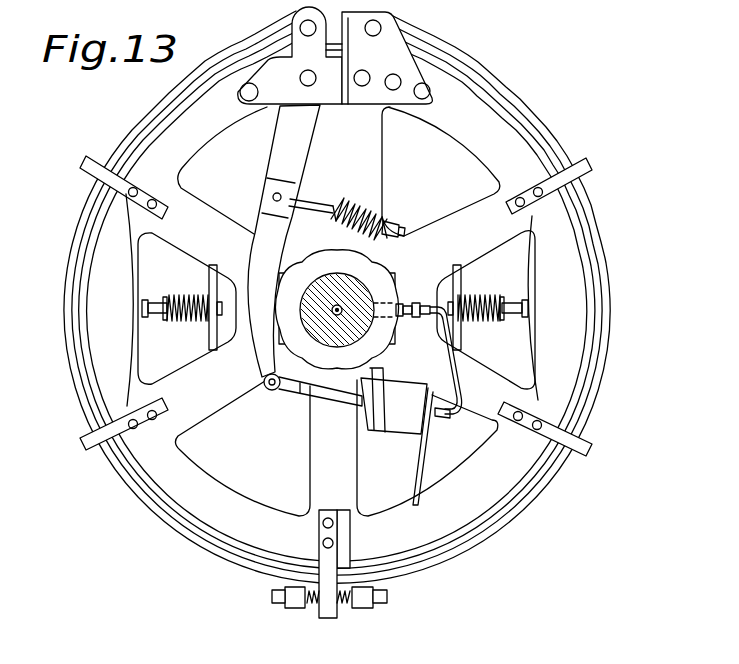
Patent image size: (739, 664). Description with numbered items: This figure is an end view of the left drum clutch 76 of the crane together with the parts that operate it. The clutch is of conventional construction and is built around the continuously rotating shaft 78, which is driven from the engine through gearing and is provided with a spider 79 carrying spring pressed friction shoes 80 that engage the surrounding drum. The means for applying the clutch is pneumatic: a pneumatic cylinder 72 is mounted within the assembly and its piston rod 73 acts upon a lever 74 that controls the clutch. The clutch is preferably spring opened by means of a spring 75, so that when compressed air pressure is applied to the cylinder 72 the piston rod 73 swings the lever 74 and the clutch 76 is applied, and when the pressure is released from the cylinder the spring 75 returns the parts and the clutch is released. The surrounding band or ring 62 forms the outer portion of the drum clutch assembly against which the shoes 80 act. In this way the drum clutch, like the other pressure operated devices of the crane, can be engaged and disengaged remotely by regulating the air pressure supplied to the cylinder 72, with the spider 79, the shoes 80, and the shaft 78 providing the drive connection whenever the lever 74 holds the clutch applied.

The band ring 62 is at (136, 478).
The pneumatic cylinder 72 is at (407, 432).
The piston rod 73 is at (330, 395).
The lever 74 is at (272, 154).
The spring 75 is at (368, 208).
The left drum clutch 76 is at (604, 306).
The continuously rotating shaft 78 is at (357, 286).
The spider 79 is at (238, 514).
The spring pressed friction shoes 80 is at (103, 336).